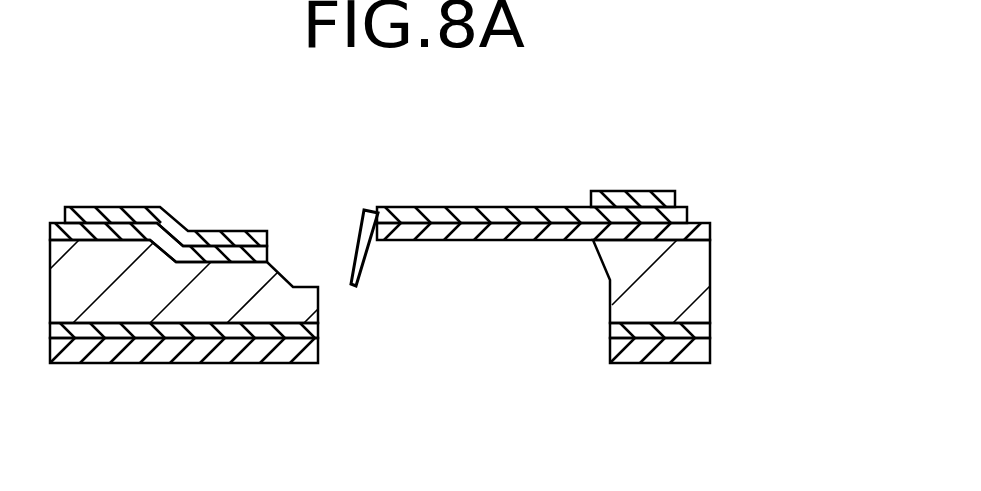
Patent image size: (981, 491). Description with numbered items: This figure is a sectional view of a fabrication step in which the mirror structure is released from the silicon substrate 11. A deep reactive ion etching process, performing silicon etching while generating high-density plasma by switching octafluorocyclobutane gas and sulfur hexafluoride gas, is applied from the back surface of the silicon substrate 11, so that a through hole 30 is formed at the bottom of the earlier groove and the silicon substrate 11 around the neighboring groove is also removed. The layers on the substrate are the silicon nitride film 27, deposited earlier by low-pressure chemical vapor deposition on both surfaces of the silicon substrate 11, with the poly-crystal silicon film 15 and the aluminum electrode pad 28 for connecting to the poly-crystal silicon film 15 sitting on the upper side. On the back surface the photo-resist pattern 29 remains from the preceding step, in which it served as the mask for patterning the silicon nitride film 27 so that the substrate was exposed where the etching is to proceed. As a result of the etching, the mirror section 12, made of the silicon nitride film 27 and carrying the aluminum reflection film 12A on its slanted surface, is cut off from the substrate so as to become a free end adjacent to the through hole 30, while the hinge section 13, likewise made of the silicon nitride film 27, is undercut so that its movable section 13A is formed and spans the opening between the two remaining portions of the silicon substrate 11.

The silicon substrate 11 is at (687, 286).
The mirror section 12 is at (393, 306).
The reflection film 12A is at (355, 250).
The hinge section 13 is at (505, 283).
The movable section 13A is at (513, 418).
The poly-crystal silicon film 15 is at (110, 216).
The silicon nitride film 27 is at (710, 226).
The electrode pad 28 is at (612, 202).
The photo-resist pattern 29 is at (712, 363).
The through hole 30 is at (344, 326).